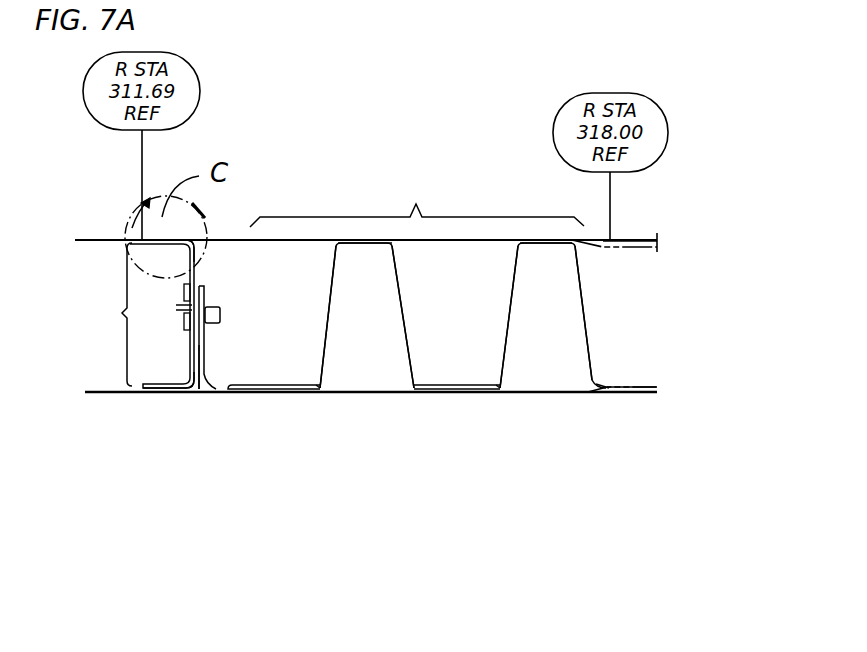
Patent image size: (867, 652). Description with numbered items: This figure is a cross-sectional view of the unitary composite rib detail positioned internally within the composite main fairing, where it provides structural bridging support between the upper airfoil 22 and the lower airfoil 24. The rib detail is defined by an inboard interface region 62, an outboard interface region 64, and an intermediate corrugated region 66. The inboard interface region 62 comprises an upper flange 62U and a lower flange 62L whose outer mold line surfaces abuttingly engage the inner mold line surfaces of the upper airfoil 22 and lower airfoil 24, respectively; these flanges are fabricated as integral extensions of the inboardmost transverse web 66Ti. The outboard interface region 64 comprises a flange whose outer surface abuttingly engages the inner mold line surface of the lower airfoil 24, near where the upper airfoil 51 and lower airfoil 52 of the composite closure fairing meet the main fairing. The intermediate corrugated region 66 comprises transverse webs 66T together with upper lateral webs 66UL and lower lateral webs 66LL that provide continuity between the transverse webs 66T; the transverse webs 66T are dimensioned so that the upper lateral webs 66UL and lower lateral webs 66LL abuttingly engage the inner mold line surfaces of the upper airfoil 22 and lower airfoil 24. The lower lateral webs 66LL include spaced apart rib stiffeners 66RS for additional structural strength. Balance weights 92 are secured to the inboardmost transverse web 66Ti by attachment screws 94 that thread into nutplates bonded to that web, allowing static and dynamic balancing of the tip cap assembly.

The upper airfoil 22 is at (104, 234).
The lower airfoil 24 is at (126, 400).
The upper airfoil 51 is at (639, 236).
The lower airfoil 52 is at (647, 389).
The inboard interface region 62 is at (141, 314).
The upper flange 62U is at (162, 256).
The lower flange 62L is at (146, 385).
The outboard interface region 64 is at (622, 386).
The intermediate corrugated region 66 is at (428, 281).
The upper lateral webs 66UL is at (361, 245).
The lower lateral webs 66LL is at (254, 397).
The transverse webs 66T is at (327, 322).
The rib stiffeners 66RS is at (274, 387).
The inboardmost transverse web 66Ti is at (200, 372).
The balance weights 92 is at (186, 352).
The attachment screws 94 is at (184, 324).